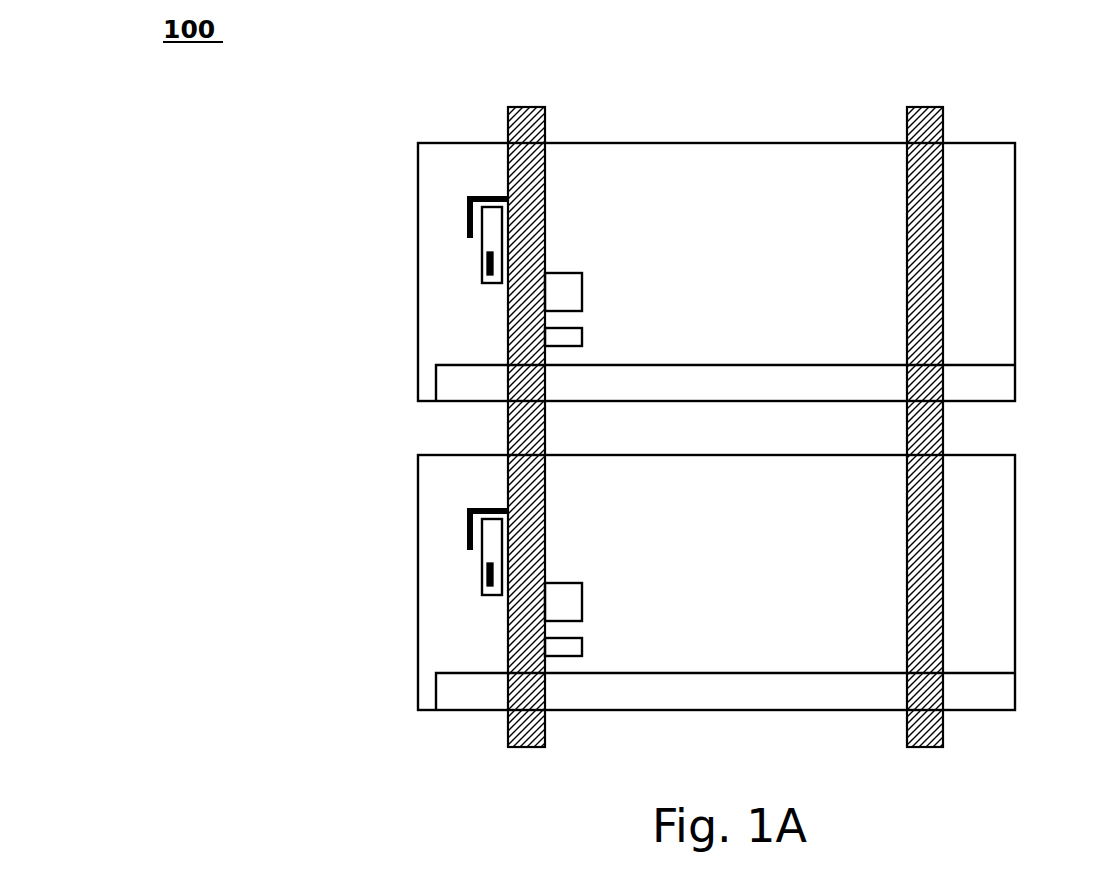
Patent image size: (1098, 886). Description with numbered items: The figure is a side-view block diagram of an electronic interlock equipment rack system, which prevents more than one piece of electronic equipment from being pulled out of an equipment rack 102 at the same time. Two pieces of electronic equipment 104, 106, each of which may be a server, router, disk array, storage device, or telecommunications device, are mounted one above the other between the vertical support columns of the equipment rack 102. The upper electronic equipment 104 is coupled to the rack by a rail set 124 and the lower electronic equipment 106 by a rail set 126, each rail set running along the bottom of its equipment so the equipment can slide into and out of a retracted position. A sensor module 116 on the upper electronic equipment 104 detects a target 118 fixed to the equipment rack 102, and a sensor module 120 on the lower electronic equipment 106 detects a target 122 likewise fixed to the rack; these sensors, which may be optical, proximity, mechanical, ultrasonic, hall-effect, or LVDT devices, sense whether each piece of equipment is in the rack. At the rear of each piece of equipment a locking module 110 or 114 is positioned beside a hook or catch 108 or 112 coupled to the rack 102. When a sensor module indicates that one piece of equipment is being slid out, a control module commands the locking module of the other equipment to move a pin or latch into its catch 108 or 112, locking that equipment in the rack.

The equipment rack 102 is at (528, 108).
The electronic equipment 104 is at (1015, 254).
The electronic equipment 106 is at (1015, 566).
The catch 108 is at (470, 218).
The locking module 110 is at (487, 263).
The catch 112 is at (470, 530).
The locking module 114 is at (487, 575).
The sensor module 116 is at (562, 272).
The target 118 is at (582, 340).
The sensor module 120 is at (562, 582).
The target 122 is at (582, 650).
The rail set 124 is at (997, 382).
The rail set 126 is at (997, 692).